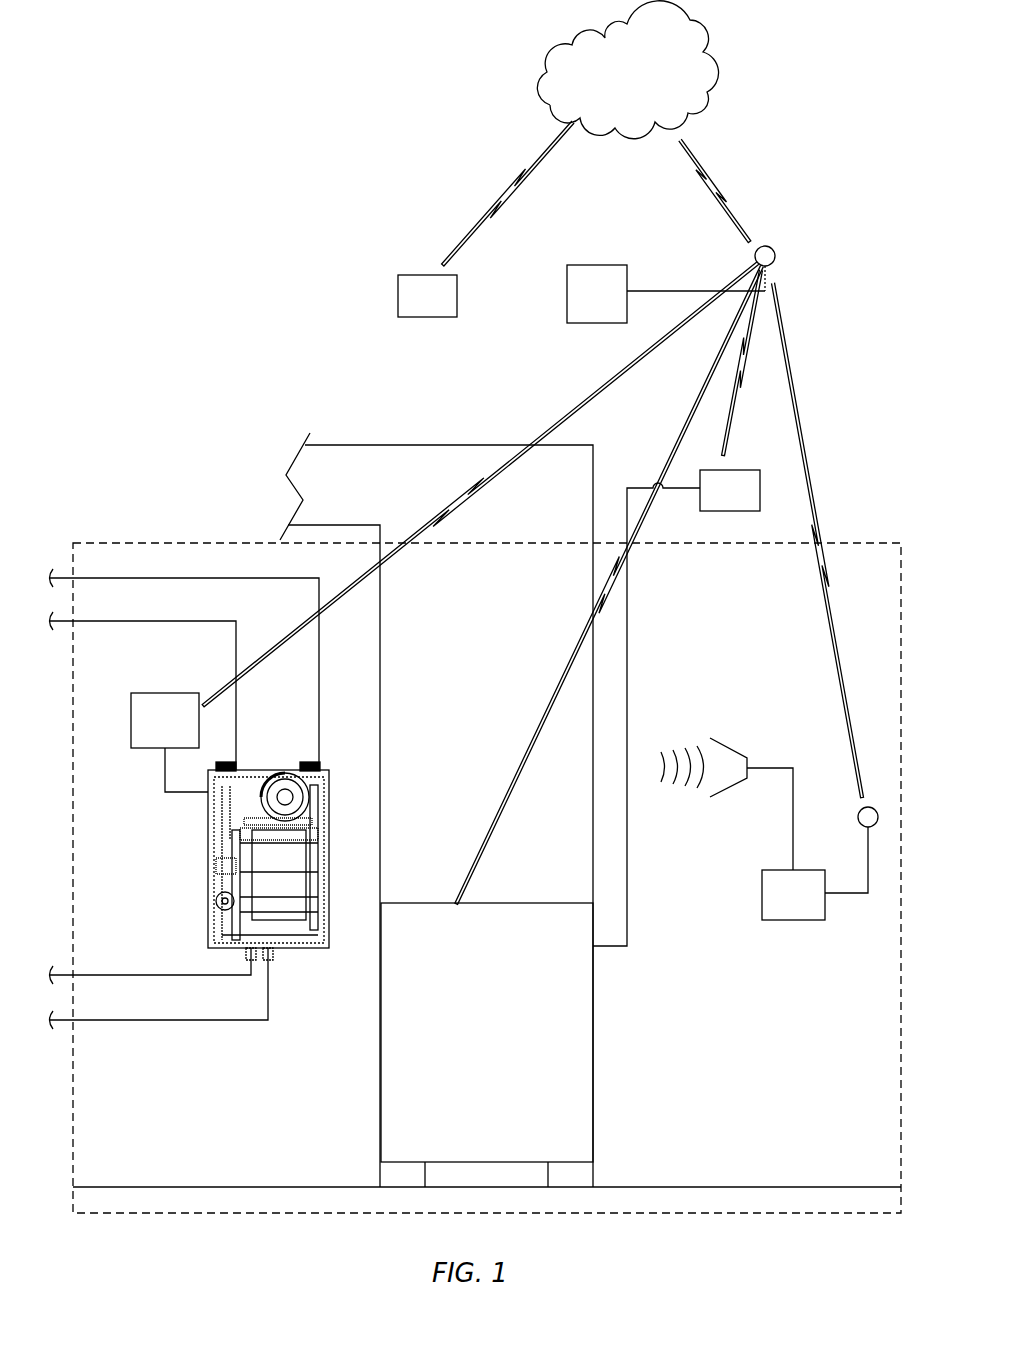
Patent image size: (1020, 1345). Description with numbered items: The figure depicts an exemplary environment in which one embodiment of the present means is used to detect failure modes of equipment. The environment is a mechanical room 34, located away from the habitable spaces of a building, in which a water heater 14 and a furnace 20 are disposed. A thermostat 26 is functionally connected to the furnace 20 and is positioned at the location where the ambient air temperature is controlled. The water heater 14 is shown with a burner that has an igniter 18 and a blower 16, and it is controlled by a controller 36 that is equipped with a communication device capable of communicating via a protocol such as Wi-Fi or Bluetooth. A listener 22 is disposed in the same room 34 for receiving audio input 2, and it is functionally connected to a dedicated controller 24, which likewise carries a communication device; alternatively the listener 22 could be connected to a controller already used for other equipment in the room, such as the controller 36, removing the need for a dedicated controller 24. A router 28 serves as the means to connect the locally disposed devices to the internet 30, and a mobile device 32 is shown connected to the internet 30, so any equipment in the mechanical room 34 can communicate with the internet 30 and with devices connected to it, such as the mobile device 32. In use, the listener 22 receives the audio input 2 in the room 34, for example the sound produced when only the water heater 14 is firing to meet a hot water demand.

The internet 30 is at (627, 70).
The mobile device 32 is at (427, 296).
The router 28 is at (666, 294).
The thermostat 26 is at (676, 708).
The controller 24 is at (820, 863).
The listener 22 is at (722, 735).
The audio input 2 is at (700, 742).
The furnace 20 is at (487, 1045).
The mechanical room 34 is at (487, 878).
The controller 36 is at (169, 742).
The water heater 14 is at (214, 901).
The blower 16 is at (287, 780).
The igniter 18 is at (256, 816).